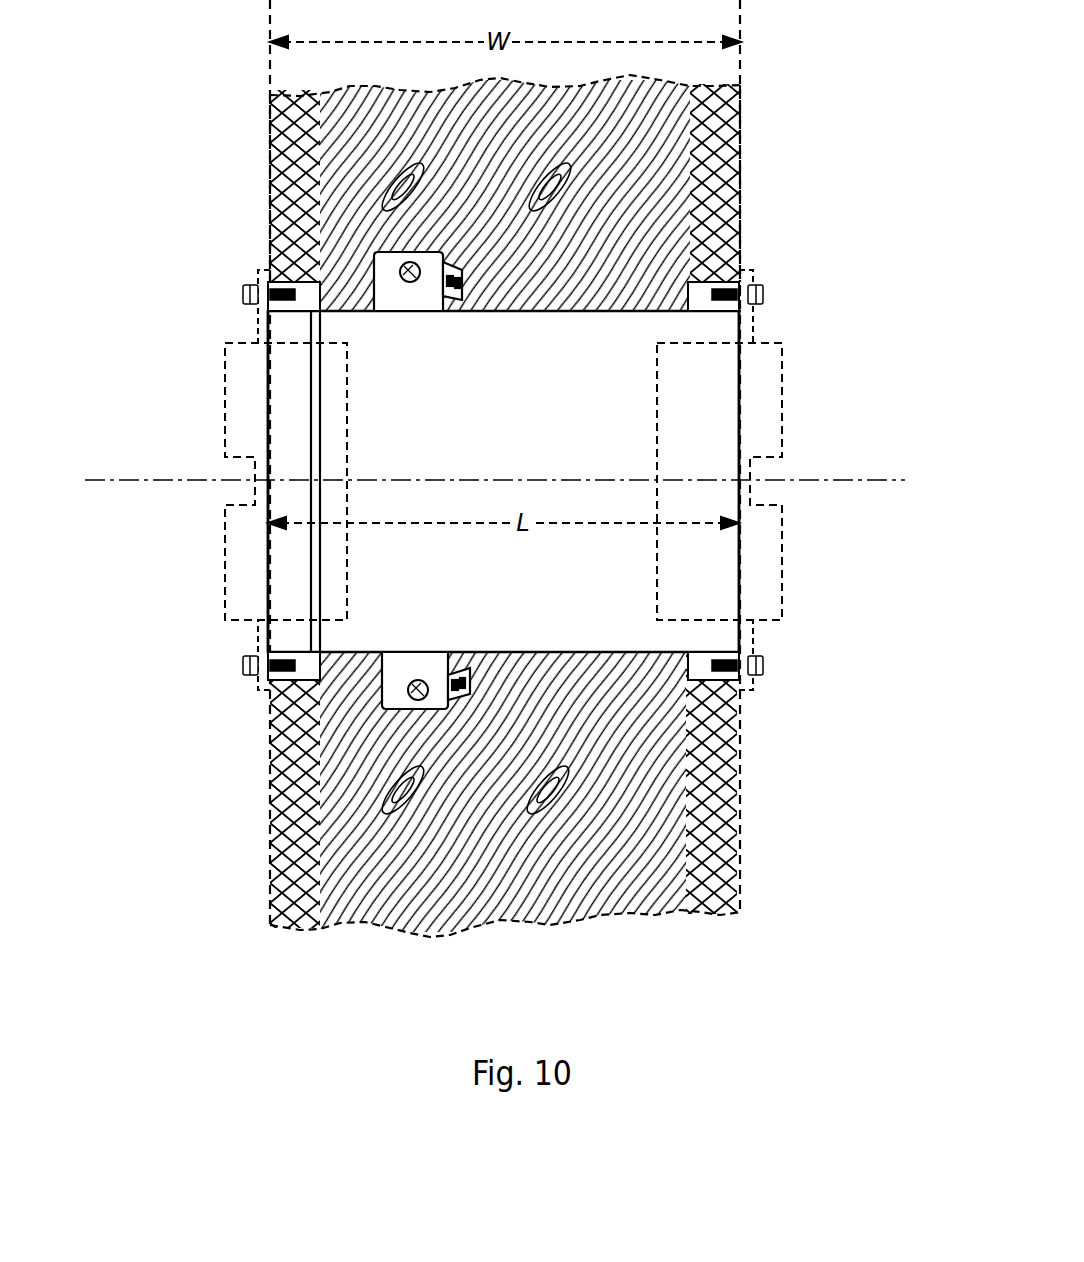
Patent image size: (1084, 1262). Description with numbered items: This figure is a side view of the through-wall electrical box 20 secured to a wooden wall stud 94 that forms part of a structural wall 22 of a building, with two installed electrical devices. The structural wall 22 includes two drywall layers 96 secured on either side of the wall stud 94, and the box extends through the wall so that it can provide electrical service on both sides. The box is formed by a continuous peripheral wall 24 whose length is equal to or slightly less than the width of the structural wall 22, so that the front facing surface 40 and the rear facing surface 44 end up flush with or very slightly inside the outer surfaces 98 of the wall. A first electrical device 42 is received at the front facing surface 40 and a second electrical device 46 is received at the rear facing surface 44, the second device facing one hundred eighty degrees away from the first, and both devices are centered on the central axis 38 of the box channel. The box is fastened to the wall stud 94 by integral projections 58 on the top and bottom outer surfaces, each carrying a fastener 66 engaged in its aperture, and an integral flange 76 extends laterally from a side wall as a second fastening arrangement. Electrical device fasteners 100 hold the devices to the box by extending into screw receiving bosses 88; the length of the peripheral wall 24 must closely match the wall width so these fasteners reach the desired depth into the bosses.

The through-wall electrical box 20 is at (157, 385).
The structural wall 22 is at (584, 475).
The peripheral wall 24 is at (503, 481).
The central axis 38 is at (879, 480).
The front facing surface 40 is at (250, 418).
The first electrical device 42 is at (240, 583).
The rear facing surface 44 is at (742, 585).
The second electrical device 46 is at (760, 552).
The integral projections 58 is at (422, 480).
The fastener 66 is at (411, 282).
The integral flange 76 is at (318, 637).
The screw receiving bosses 88 is at (488, 512).
The wooden wall stud 94 is at (592, 280).
The drywall layers 96 is at (277, 222).
The outer surfaces 98 is at (247, 233).
The electrical device fasteners 100 is at (247, 296).